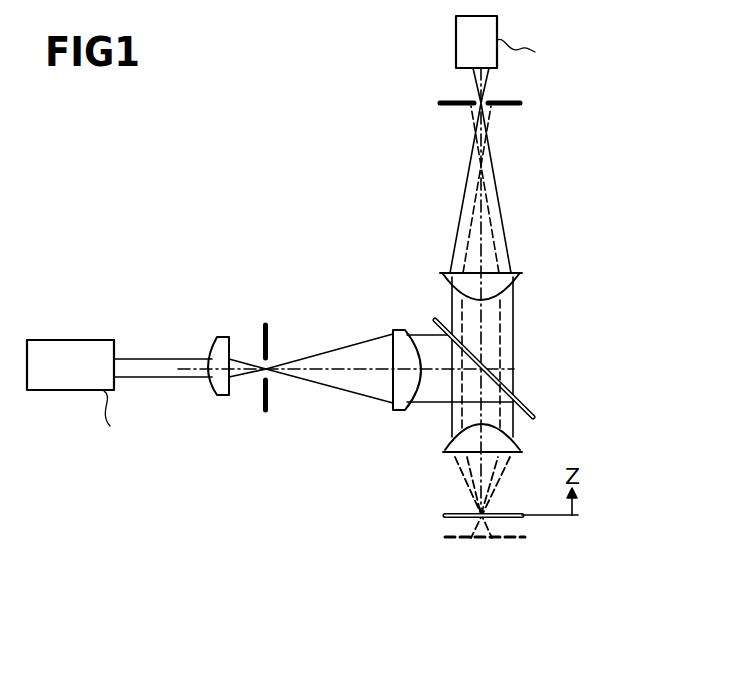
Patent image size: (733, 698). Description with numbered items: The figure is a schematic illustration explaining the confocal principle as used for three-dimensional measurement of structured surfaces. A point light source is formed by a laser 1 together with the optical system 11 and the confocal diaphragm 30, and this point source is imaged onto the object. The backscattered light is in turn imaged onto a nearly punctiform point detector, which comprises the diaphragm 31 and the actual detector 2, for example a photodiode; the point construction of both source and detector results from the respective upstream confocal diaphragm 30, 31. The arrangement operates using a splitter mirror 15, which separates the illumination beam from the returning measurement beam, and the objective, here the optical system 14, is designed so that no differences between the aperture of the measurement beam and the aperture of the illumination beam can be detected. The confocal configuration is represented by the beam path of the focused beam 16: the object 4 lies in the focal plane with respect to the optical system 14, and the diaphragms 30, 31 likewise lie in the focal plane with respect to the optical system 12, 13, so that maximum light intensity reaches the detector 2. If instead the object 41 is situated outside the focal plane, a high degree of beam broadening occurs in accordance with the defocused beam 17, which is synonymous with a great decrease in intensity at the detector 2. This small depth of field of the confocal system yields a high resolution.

The laser 1 is at (78, 353).
The detector 2 is at (467, 44).
The optical system 11 is at (216, 351).
The confocal diaphragm 30 is at (265, 324).
The optical system 12 is at (404, 333).
The optical system 13 is at (521, 276).
The optical system 14 is at (510, 445).
The splitter mirror 15 is at (536, 413).
The focused beam 16 is at (493, 168).
The defocused beam 17 is at (489, 128).
The confocal diaphragm 31 is at (440, 103).
The object 4 is at (445, 515).
The object 41 is at (445, 537).